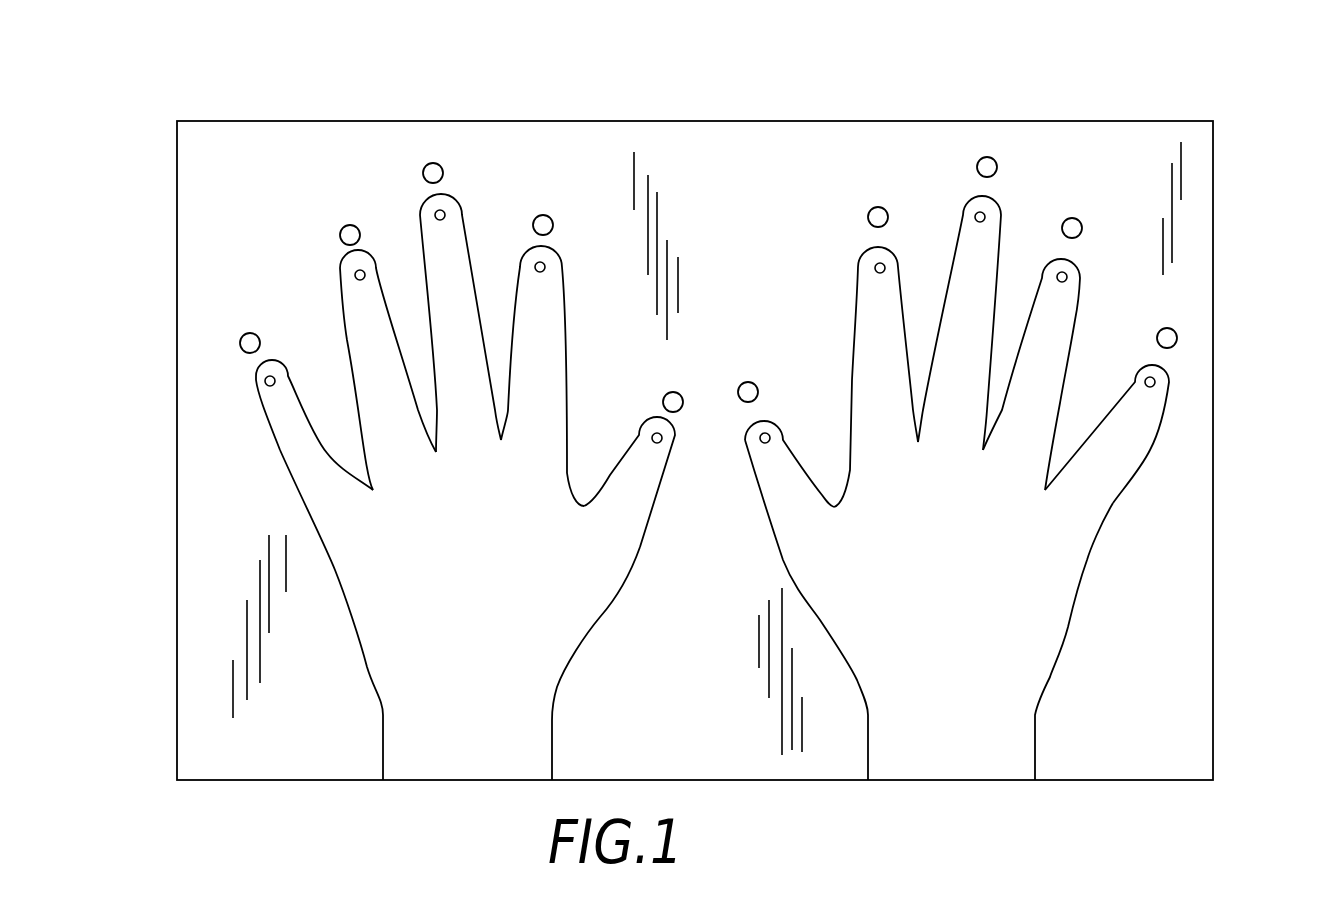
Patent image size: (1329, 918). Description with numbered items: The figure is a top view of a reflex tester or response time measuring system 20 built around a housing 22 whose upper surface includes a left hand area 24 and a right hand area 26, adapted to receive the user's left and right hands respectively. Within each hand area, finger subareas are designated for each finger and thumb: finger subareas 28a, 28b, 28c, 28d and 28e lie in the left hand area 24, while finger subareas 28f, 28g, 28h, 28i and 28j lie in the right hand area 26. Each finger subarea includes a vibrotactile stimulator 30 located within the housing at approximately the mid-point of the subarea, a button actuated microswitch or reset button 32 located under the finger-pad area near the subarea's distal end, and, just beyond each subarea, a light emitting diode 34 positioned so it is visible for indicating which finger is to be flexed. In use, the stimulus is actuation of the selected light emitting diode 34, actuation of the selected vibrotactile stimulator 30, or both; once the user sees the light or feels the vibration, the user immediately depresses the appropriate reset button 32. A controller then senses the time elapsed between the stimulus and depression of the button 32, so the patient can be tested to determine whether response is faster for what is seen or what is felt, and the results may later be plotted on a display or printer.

The response time measuring system 20 is at (1262, 248).
The housing 22 is at (720, 148).
The left hand area 24 is at (525, 662).
The right hand area 26 is at (1013, 670).
The finger subarea 28a is at (280, 422).
The finger subarea 28b is at (357, 299).
The finger subarea 28c is at (432, 215).
The finger subarea 28d is at (528, 238).
The finger subarea 28e is at (623, 467).
The finger subarea 28f is at (800, 520).
The finger subarea 28g is at (867, 302).
The finger subarea 28h is at (977, 203).
The finger subarea 28i is at (1068, 275).
The finger subarea 28j is at (1130, 448).
The vibrotactile stimulator 30 is at (310, 447).
The button actuated microswitch 32 is at (265, 381).
The light emitting diode 34 is at (251, 334).